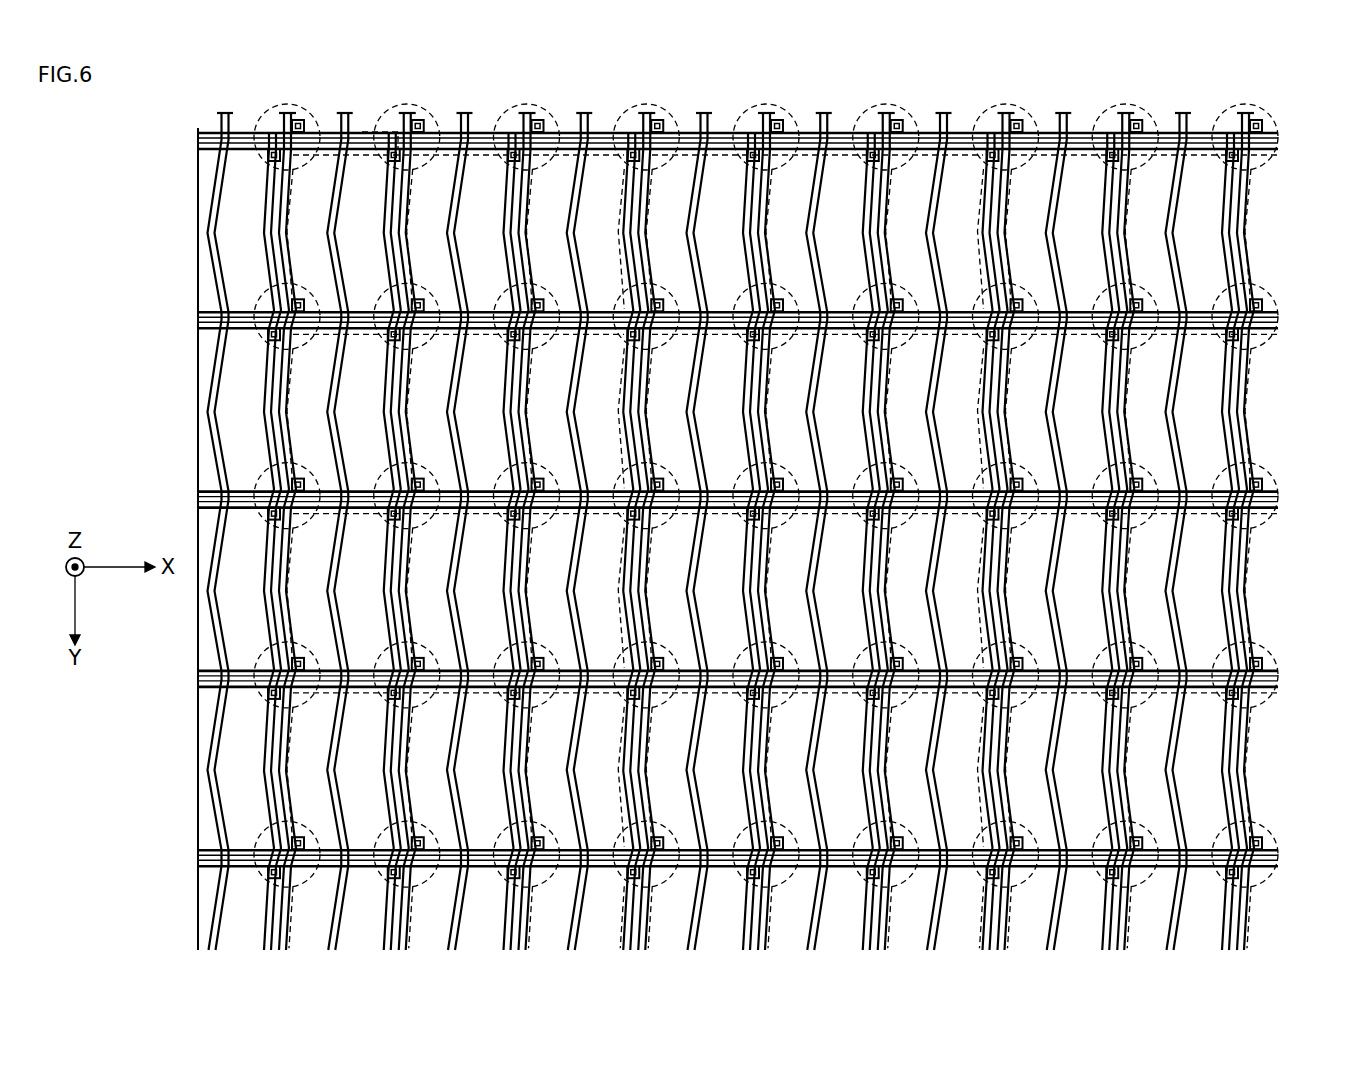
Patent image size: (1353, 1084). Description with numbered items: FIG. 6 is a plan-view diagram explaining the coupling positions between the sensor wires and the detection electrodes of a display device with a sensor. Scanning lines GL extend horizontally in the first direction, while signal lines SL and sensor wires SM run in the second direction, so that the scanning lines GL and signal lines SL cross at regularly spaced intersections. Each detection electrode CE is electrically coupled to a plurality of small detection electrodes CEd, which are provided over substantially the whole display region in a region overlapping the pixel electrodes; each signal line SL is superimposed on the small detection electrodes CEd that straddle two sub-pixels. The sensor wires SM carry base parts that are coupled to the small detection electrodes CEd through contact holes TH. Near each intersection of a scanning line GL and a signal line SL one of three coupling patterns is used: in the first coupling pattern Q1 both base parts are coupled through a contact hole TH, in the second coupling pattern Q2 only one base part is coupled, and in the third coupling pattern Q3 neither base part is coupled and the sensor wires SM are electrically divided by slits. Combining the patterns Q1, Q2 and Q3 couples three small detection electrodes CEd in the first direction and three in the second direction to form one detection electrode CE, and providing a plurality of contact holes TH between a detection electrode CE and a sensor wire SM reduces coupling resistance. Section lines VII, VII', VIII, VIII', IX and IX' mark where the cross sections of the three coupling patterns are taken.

The scanning line GL is at (1278, 134).
The signal line SL is at (230, 113).
The sensor wire SM is at (282, 113).
The contact hole TH is at (418, 576).
The first coupling pattern Q1 is at (813, 564).
The second coupling pattern Q2 is at (633, 475).
The third coupling pattern Q3 is at (311, 104).
The detection electrode CE is at (1035, 128).
The small detection electrode CEd is at (368, 133).
The section line VII is at (367, 539).
The section line VII' is at (443, 524).
The section line VIII is at (248, 716).
The section line VIII' is at (325, 703).
The section line IX is at (365, 716).
The section line IX' is at (443, 703).